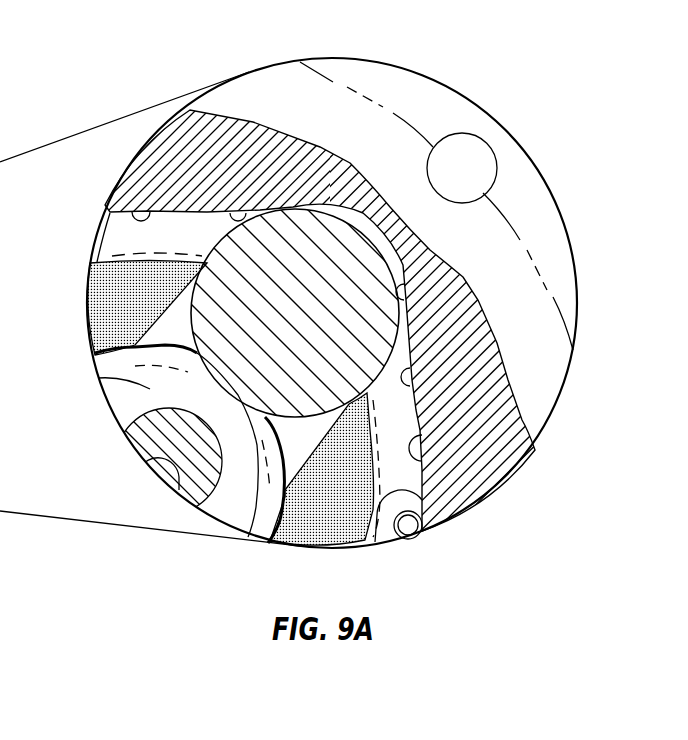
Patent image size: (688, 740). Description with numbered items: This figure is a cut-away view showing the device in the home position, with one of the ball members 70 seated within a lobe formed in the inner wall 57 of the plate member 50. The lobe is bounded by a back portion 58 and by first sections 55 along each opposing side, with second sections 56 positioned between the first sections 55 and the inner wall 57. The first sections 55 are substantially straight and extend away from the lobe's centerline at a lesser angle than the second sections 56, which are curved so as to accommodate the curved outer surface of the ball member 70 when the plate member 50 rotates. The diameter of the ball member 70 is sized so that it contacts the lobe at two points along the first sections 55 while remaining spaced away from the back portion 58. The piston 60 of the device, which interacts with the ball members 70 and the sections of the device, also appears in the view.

The plate member 50 is at (182, 213).
The first sections 55 is at (280, 210).
The second sections 56 is at (227, 213).
The inner wall 57 is at (110, 215).
The back portion 58 is at (390, 243).
The piston 60 is at (152, 390).
The ball members 70 is at (310, 270).